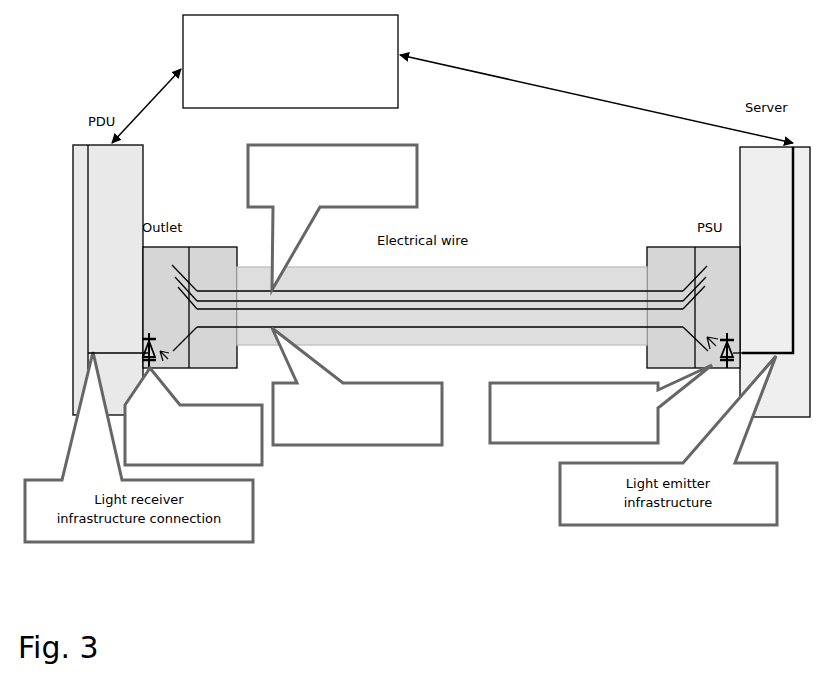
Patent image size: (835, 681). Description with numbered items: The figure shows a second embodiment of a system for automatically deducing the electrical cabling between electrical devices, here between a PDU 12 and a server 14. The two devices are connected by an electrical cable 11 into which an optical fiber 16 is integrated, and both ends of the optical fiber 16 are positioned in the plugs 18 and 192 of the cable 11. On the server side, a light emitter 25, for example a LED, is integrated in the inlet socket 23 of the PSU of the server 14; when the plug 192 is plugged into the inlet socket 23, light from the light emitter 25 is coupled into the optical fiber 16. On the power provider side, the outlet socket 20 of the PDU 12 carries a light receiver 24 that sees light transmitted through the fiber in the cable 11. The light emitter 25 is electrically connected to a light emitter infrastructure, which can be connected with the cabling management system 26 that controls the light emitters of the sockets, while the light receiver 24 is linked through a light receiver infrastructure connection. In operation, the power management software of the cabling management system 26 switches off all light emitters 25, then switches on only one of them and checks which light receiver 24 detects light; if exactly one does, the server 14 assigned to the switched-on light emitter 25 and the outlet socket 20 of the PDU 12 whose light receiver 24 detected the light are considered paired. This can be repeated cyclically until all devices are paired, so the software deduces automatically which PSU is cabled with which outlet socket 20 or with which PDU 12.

The cabling management system 26 is at (290, 61).
The PDU 12 is at (108, 280).
The server 14 is at (775, 282).
The plug 18 is at (190, 307).
The plug 192 is at (693, 307).
The electrical cable 11 is at (440, 245).
The outlet socket 20 is at (172, 283).
The inlet socket 23 is at (708, 283).
The optical fiber 16 is at (439, 386).
The light receiver 24 is at (175, 399).
The light emitter 25 is at (616, 388).